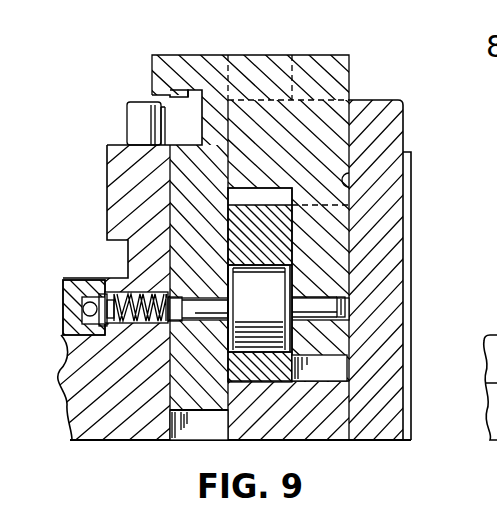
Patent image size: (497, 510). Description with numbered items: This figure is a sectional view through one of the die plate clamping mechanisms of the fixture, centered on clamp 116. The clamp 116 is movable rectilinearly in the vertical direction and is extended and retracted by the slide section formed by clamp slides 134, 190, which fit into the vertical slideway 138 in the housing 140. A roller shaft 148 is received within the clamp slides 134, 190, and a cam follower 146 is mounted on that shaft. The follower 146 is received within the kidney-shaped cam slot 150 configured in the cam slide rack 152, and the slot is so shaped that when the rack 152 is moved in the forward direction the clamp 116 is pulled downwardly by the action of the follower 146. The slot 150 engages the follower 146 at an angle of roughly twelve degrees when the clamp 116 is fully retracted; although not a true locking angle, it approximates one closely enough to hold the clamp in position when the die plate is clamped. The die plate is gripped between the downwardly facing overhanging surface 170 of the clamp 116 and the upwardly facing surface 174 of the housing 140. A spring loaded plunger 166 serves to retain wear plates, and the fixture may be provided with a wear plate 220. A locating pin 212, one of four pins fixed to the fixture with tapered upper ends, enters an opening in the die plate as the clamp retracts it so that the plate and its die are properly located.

The clamp 116 is at (265, 57).
The clamp slide 134 is at (333, 263).
The vertical slideway 138 is at (343, 196).
The housing 140 is at (402, 125).
The cam follower 146 is at (284, 372).
The roller shaft 148 is at (347, 310).
The cam slot 150 is at (257, 265).
The cam slide rack 152 is at (263, 208).
The spring loaded plunger 166 is at (86, 283).
The overhanging surface 170 is at (163, 103).
The upwardly facing surface 174 is at (112, 133).
The clamp slide 190 is at (197, 400).
The locating pin 212 is at (132, 118).
The wear plate 220 is at (62, 305).